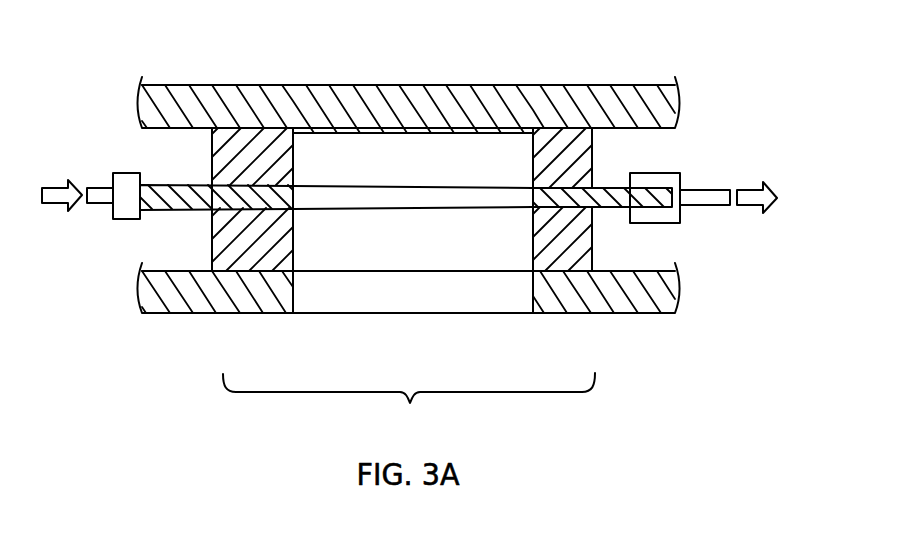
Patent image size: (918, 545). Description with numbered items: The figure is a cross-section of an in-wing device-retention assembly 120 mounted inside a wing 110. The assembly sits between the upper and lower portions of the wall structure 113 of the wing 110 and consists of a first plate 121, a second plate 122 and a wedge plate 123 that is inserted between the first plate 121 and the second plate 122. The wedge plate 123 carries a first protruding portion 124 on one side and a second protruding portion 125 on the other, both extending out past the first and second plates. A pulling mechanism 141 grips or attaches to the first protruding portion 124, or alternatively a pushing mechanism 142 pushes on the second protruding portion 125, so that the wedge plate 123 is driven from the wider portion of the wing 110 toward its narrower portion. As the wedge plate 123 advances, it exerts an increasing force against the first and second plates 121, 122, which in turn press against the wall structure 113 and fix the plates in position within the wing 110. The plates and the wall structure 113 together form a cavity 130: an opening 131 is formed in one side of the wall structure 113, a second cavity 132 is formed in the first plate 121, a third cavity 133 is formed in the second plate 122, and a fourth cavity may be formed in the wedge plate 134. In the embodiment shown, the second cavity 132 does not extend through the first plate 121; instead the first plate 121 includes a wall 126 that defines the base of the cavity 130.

The wing 110 is at (570, 85).
The wall structure 113 is at (638, 300).
The in-wing device-retention assembly 120 is at (409, 402).
The first plate 121 is at (587, 152).
The second plate 122 is at (584, 254).
The wedge plate 123 is at (224, 203).
The first protruding portion 124 is at (599, 189).
The second protruding portion 125 is at (172, 196).
The wall 126 is at (390, 129).
The cavity 130 is at (470, 316).
The opening 131 is at (366, 298).
The second cavity 132 is at (480, 160).
The third cavity 133 is at (389, 242).
The fourth cavity in wedge plate 134 is at (424, 199).
The pulling mechanism 141 is at (684, 178).
The pushing mechanism 142 is at (125, 183).